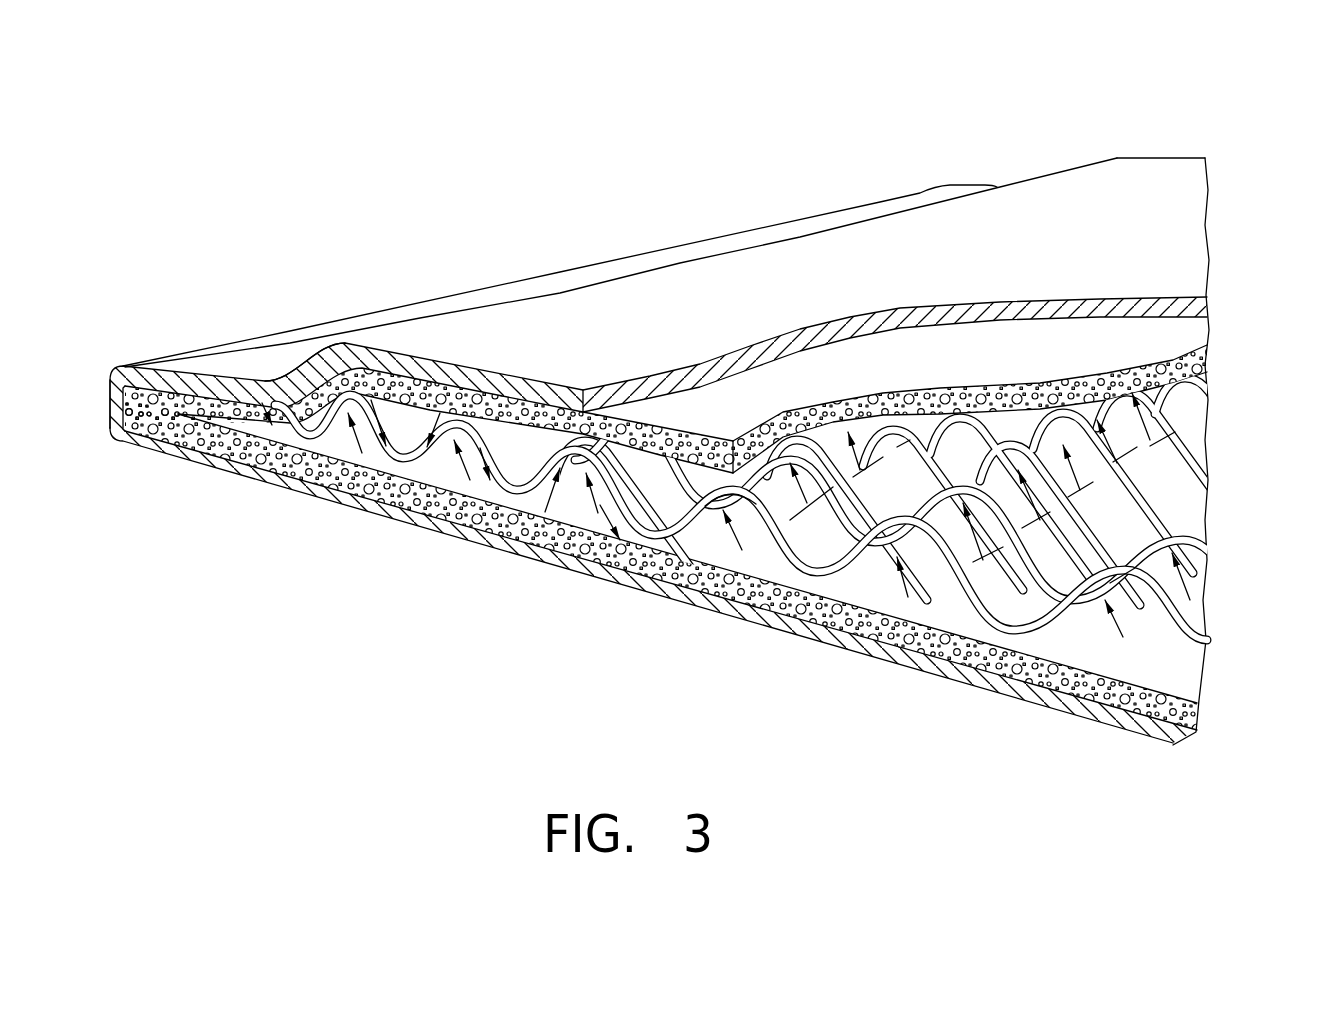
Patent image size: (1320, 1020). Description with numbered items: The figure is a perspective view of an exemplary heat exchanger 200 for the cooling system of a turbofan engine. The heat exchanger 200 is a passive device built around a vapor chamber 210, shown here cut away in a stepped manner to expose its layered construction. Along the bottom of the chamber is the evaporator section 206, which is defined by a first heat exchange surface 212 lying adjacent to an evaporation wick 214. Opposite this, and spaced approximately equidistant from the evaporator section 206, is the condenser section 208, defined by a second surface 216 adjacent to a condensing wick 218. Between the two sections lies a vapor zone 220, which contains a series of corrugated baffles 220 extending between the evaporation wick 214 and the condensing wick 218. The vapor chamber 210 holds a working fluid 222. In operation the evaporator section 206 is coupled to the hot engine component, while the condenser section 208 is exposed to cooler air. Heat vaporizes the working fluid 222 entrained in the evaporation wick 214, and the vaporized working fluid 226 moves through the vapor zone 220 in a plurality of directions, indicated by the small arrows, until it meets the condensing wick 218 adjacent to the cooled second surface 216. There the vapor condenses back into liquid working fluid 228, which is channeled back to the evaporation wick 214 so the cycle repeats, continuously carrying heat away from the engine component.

The heat exchanger 200 is at (1085, 85).
The evaporator section 206 is at (227, 528).
The condenser section 208 is at (793, 278).
The vapor chamber 210 is at (1170, 157).
The first heat exchange surface 212 is at (1067, 710).
The evaporation wick 214 is at (1017, 667).
The second surface 216 is at (639, 339).
The condensing wick 218 is at (891, 375).
The vapor zone with corrugated baffles 220 is at (1184, 612).
The working fluid 222 is at (718, 503).
The vaporized working fluid 226 is at (905, 582).
The liquid working fluid 228 is at (292, 374).